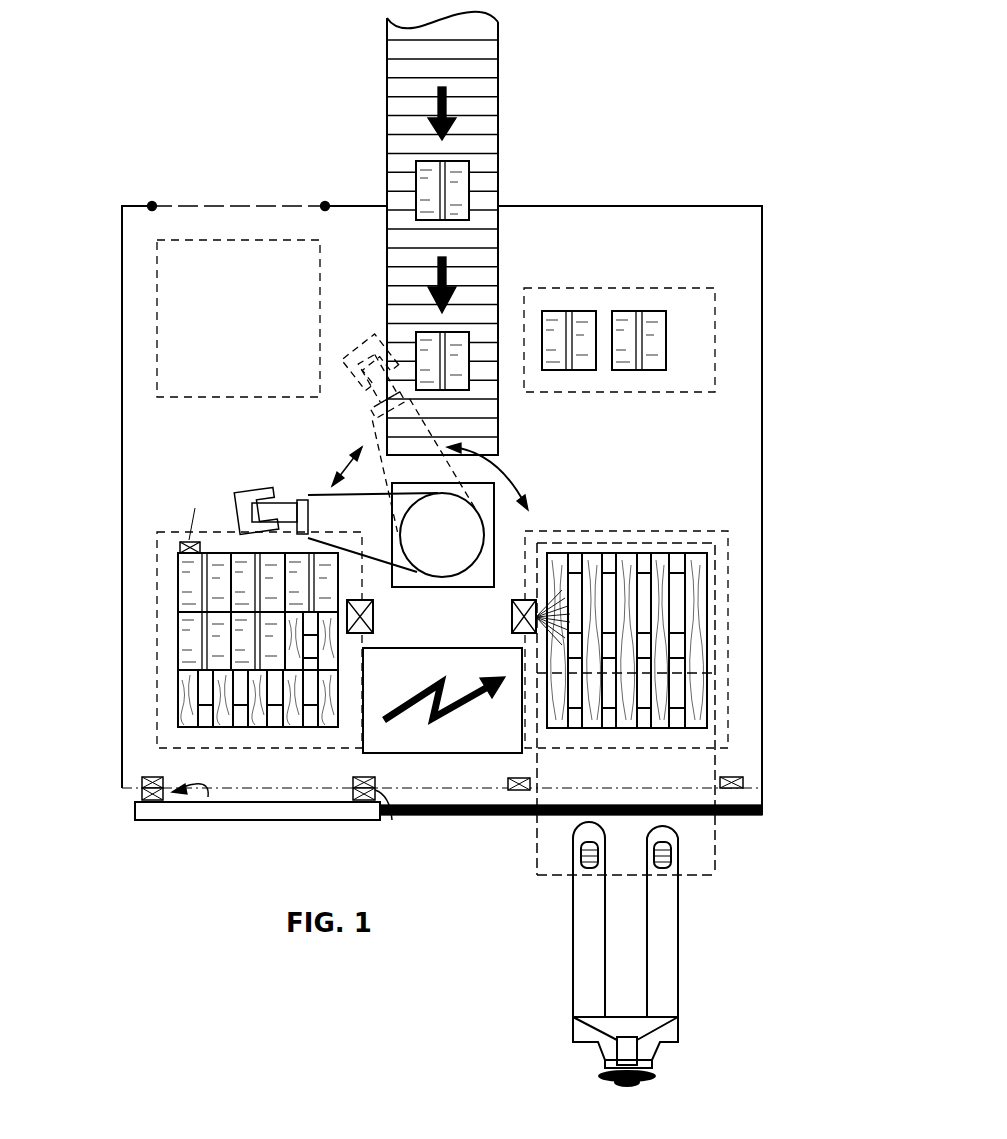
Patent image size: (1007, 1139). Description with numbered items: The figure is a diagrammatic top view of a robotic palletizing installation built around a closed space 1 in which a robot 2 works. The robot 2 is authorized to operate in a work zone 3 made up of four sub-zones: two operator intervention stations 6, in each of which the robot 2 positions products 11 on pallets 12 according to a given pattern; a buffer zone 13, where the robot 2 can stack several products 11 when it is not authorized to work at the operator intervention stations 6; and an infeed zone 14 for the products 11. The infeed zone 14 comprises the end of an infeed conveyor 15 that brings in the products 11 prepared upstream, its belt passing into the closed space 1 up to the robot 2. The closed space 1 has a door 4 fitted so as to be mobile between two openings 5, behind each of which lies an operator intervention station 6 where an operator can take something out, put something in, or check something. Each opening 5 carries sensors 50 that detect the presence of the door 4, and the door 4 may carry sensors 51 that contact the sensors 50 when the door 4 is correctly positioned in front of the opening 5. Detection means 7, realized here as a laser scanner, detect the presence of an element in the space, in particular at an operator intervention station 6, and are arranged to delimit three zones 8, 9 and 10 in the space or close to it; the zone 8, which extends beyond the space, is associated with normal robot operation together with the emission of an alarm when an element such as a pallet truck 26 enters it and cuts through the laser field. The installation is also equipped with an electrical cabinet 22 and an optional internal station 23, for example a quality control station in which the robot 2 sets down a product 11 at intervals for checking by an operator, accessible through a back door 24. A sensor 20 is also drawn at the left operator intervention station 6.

The closed space 1 is at (784, 346).
The robot 2 is at (433, 547).
The work zone 3 is at (481, 320).
The door 4 is at (263, 810).
The opening 5 is at (208, 797).
The operator intervention station 6 is at (165, 647).
The detection means 7 is at (373, 617).
The zone 8 is at (697, 855).
The zone 9 is at (700, 768).
The zone 10 is at (712, 600).
The product 11 is at (455, 183).
The pallet 12 is at (188, 700).
The buffer zone 13 is at (700, 318).
The infeed zone 14 is at (405, 352).
The infeed conveyor 15 is at (408, 72).
The sensor 20 is at (183, 542).
The electrical cabinet 22 is at (468, 745).
The internal station 23 is at (223, 332).
The back door 24 is at (207, 203).
The pallet truck 26 is at (660, 965).
The sensor 50 is at (142, 785).
The sensor 51 is at (150, 800).